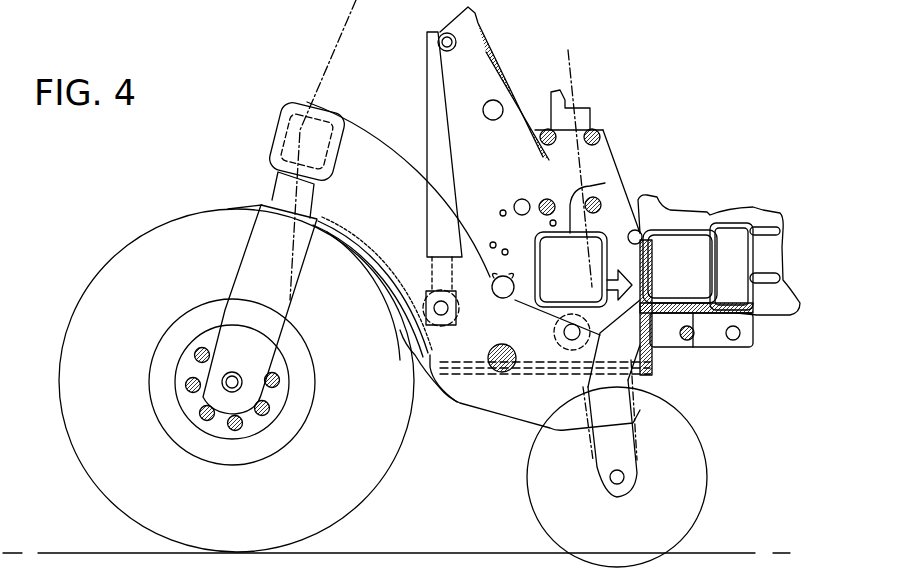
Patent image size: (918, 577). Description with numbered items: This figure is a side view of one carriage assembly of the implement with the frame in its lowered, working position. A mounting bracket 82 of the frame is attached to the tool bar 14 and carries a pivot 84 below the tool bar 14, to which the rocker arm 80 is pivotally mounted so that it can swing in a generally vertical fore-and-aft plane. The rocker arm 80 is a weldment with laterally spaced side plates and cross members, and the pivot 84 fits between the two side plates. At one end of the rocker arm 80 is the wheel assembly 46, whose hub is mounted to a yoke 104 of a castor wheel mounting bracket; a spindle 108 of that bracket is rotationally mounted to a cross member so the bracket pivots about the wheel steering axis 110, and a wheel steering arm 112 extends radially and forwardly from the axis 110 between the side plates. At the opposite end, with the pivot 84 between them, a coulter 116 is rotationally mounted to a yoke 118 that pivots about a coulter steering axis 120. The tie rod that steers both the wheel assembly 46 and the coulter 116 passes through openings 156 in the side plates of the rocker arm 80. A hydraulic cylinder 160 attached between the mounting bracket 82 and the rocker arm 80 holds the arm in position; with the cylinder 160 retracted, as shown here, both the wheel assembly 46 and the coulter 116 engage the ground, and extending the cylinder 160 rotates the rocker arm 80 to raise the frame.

The tool bar 14 is at (580, 187).
The wheel assembly 46 is at (93, 275).
The rocker arm 80 is at (453, 393).
The mounting bracket 82 is at (618, 157).
The pivot 84 is at (572, 330).
The yoke 104 is at (296, 282).
The spindle 108 is at (273, 195).
The wheel steering axis 110 is at (343, 35).
The wheel steering arm 112 is at (345, 243).
The coulter 116 is at (700, 492).
The yoke 118 is at (627, 440).
The coulter steering axis 120 is at (572, 72).
The opening 156 is at (510, 377).
The hydraulic cylinder 160 is at (445, 127).